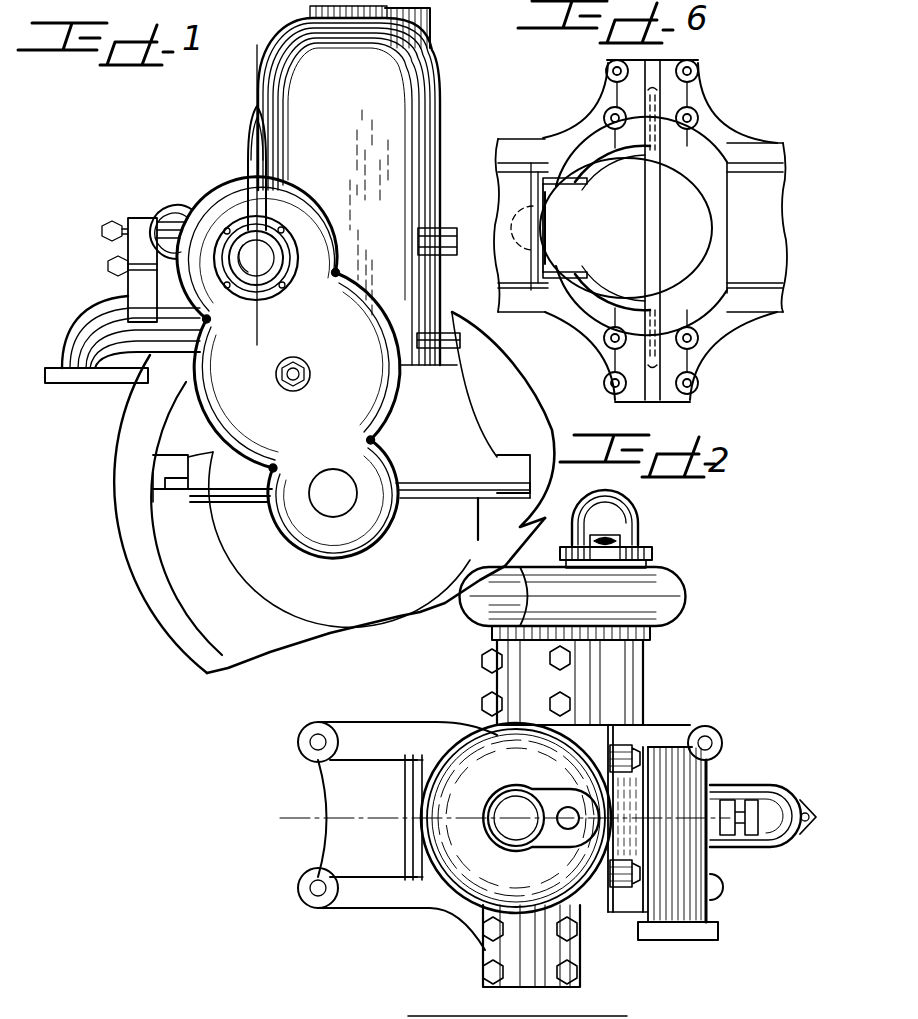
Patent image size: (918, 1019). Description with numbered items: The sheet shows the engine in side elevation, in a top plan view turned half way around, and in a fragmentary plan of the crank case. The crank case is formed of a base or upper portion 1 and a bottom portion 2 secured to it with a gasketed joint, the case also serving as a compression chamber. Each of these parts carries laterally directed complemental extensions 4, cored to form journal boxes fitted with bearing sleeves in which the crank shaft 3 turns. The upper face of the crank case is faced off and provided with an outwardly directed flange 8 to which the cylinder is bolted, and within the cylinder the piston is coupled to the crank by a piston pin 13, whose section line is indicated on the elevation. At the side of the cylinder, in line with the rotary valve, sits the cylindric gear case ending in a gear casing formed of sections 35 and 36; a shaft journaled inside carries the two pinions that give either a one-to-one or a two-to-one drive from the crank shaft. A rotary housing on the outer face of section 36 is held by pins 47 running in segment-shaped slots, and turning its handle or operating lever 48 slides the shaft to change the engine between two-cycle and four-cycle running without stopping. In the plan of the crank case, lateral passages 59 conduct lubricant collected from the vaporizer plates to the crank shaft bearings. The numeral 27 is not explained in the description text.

In FIG. 1, the base or upper portion of the crank case 1 is at (455, 462).
In FIG. 1, the bottom portion of the crank case 2 is at (305, 566).
In FIG. 1, the crank shaft 3 is at (322, 505).
In FIG. 2, the crank shaft 3 is at (252, 819).
In FIG. 2, the laterally directed complemental extensions 4 is at (505, 692).
In FIG. 1, the outwardly directed flange 8 is at (457, 360).
In FIG. 6, the outwardly directed flange 8 is at (705, 170).
In FIG. 1, the piston pin 13 is at (245, 46).
In FIG. 1, the pipe elbow 27 is at (78, 370).
In FIG. 2, the pipe elbow 27 is at (534, 836).
In FIG. 2, the gear casing section 35 is at (666, 608).
In FIG. 1, the gear casing section 36 is at (262, 425).
In FIG. 2, the gear casing section 36 is at (668, 586).
In FIG. 1, the pins 47 is at (230, 235).
In FIG. 1, the handle or operating lever 48 is at (253, 140).
In FIG. 2, the handle or operating lever 48 is at (618, 547).
In FIG. 6, the passages 59 is at (583, 176).